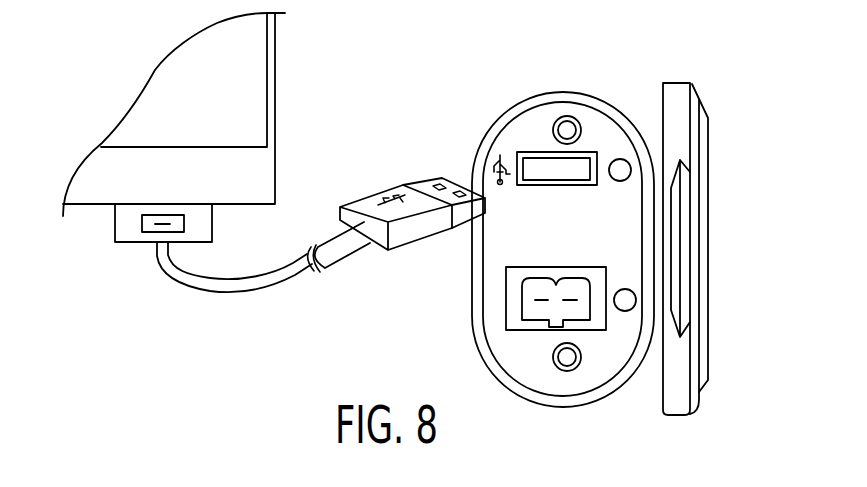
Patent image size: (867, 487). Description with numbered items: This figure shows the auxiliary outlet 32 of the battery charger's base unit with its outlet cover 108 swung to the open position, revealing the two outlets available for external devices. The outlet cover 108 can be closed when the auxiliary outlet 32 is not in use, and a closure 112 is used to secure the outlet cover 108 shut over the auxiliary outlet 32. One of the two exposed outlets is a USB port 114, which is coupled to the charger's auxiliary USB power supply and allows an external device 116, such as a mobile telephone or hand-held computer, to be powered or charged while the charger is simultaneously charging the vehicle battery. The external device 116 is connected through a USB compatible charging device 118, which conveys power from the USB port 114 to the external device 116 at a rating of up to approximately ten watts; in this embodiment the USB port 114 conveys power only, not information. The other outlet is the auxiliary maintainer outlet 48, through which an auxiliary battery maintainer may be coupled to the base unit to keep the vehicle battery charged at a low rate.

The auxiliary outlet 32 is at (629, 85).
The auxiliary maintainer outlet 48 is at (528, 318).
The outlet cover 108 is at (703, 183).
The closure 112 is at (685, 298).
The USB port 114 is at (558, 167).
The external device 116 is at (277, 107).
The USB charging device 118 is at (210, 290).